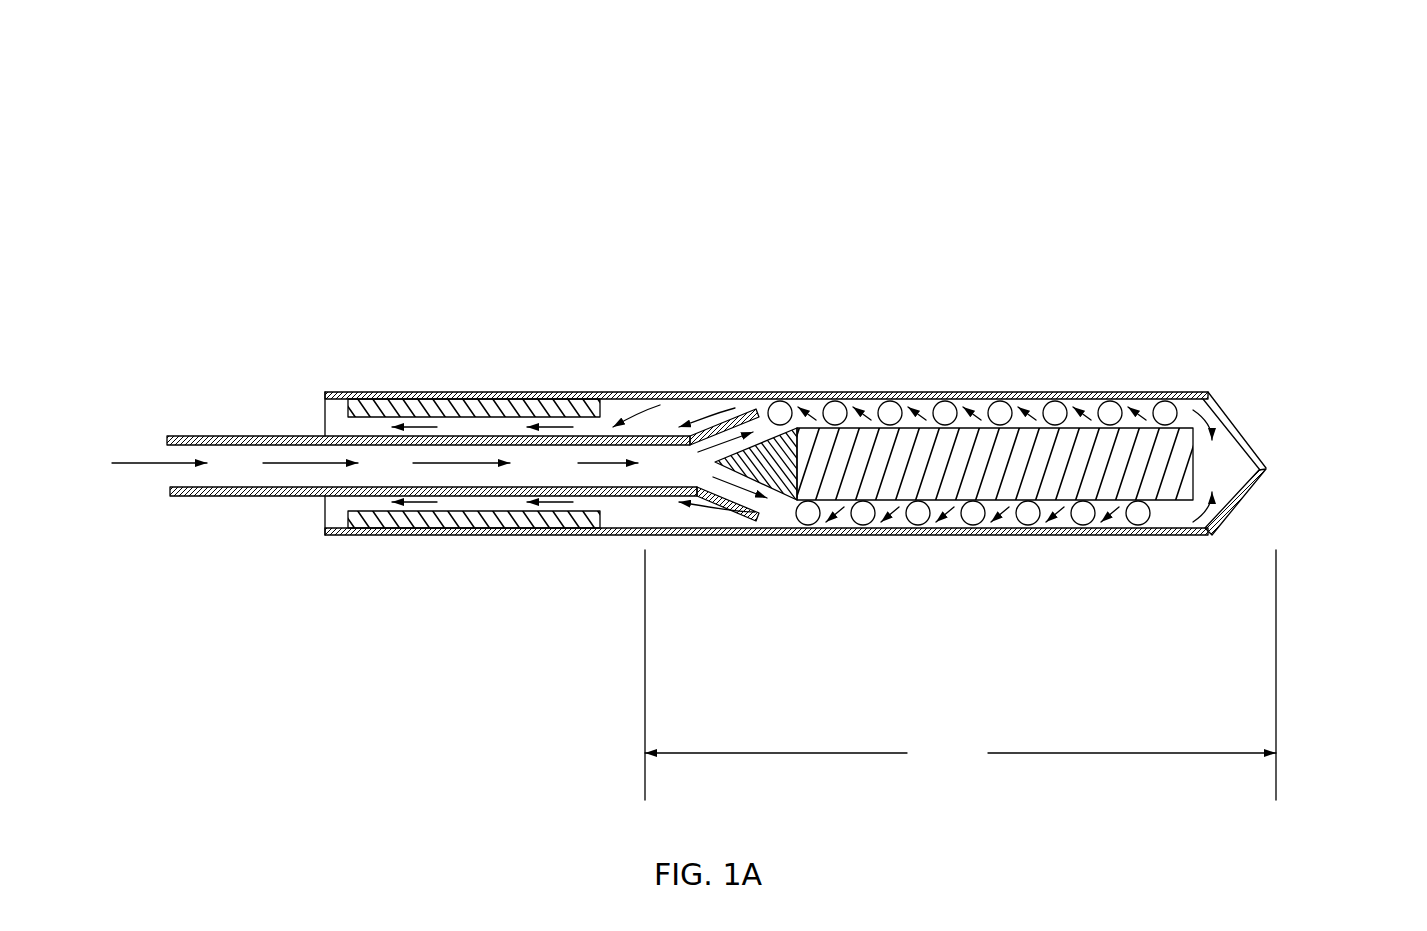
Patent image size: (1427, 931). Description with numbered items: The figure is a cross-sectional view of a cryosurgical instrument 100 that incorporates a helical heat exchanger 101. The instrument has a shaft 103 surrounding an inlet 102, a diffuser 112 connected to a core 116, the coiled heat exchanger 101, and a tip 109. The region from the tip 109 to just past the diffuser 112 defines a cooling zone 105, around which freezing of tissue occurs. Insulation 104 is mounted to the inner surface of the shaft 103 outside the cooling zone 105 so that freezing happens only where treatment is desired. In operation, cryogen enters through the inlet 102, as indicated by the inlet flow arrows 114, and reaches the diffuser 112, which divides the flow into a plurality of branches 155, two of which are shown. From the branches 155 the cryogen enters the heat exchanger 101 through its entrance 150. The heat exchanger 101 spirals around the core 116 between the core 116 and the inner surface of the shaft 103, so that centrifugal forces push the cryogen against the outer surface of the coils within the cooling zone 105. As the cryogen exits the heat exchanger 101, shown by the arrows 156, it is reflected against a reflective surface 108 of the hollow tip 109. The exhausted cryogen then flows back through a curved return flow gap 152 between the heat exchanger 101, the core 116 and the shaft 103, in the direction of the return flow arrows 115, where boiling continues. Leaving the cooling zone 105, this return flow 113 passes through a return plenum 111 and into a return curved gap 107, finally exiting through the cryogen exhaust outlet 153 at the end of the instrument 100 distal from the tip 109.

The cryosurgical instrument 100 is at (353, 163).
The heat exchanger 101 is at (1002, 415).
The inlet 102 is at (202, 433).
The shaft 103 is at (442, 392).
The insulation 104 is at (447, 530).
The cooling zone 105 is at (960, 675).
The return curved gap 107 is at (518, 500).
The reflective surface 108 is at (1240, 470).
The tip 109 is at (1268, 468).
The return plenum 111 is at (630, 407).
The diffuser 112 is at (740, 462).
The return flow 113 is at (563, 500).
The inlet flow arrows 114 is at (452, 468).
The return flow arrows 115 is at (1080, 418).
The core 116 is at (920, 462).
The entrance 150 is at (765, 420).
The return flow gap 152 is at (861, 418).
The cryogen exhaust outlet 153 is at (330, 420).
The branches 155 is at (763, 505).
The arrows 156 is at (1200, 463).